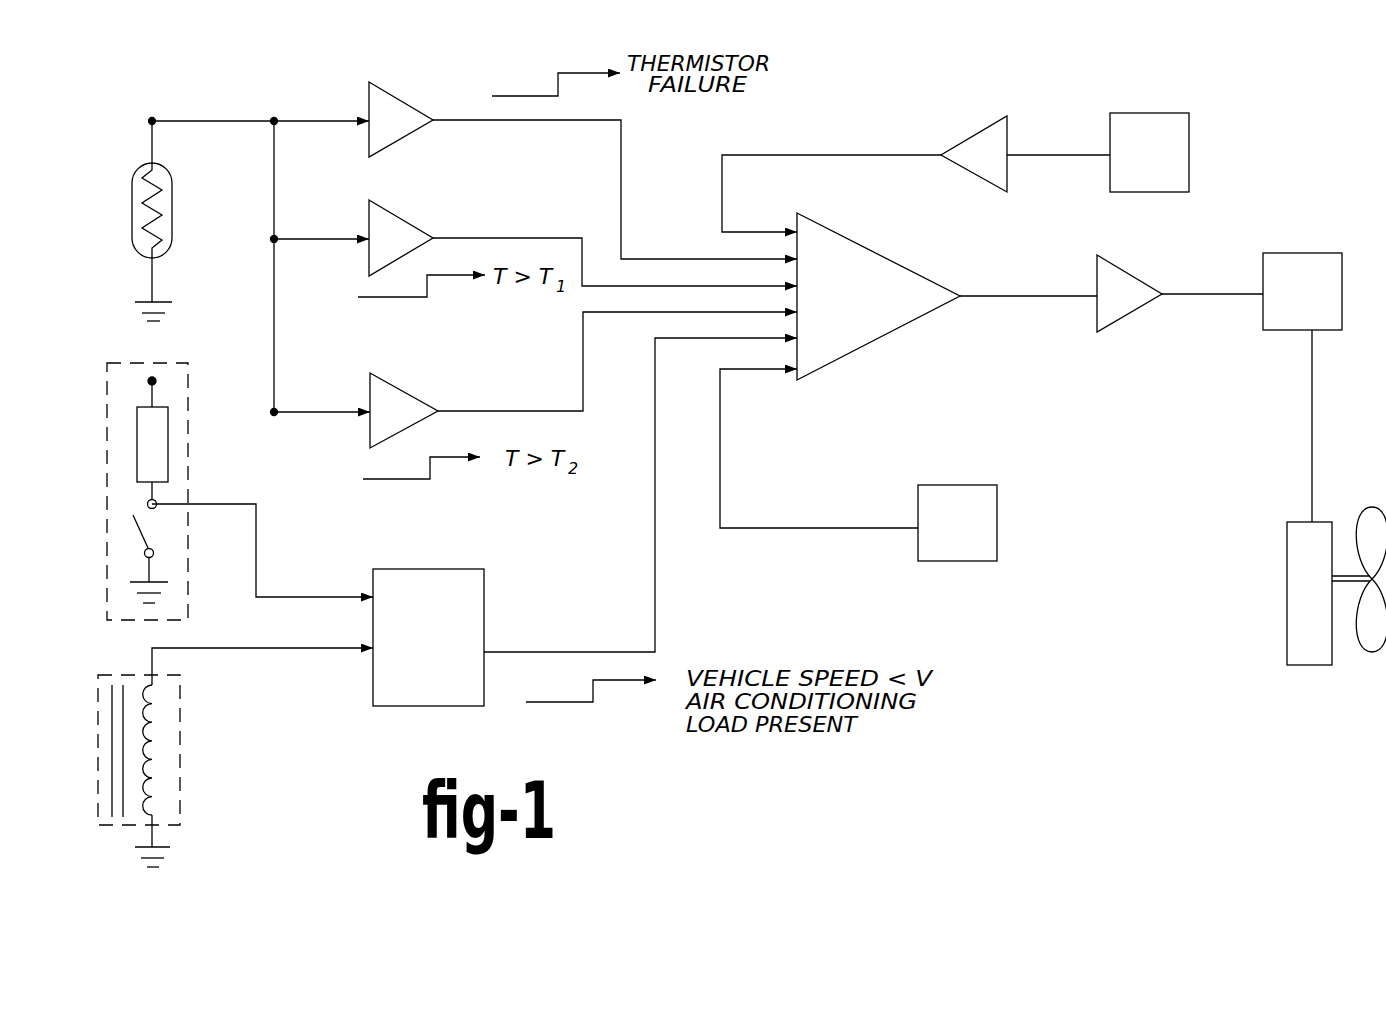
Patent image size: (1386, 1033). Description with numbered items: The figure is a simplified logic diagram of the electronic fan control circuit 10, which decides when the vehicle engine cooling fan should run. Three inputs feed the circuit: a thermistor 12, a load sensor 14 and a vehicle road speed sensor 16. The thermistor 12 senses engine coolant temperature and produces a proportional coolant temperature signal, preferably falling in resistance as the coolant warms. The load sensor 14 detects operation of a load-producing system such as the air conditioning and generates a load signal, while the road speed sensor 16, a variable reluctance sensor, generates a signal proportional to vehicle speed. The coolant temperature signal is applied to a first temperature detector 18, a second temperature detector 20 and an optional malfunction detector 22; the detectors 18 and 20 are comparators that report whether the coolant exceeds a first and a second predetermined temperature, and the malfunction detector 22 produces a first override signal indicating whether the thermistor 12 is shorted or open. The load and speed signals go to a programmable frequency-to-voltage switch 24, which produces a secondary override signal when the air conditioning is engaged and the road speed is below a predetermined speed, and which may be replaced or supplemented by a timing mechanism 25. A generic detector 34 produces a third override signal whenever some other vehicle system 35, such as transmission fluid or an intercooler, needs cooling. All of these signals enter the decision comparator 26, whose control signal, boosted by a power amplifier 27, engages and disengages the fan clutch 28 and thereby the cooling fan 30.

The electronic fan control circuit 10 is at (873, 115).
The thermistor 12 is at (133, 198).
The load sensor 14 is at (188, 415).
The vehicle road speed sensor 16 is at (180, 773).
The first temperature detector 18 is at (401, 238).
The second temperature detector 20 is at (404, 410).
The malfunction detector 22 is at (401, 119).
The programmable frequency-to-voltage switch 24 is at (428, 637).
The timing mechanism 25 is at (957, 523).
The decision comparator 26 is at (878, 296).
The power amplifier 27 is at (1129, 293).
The fan clutch 28 is at (1302, 291).
The cooling fan 30 is at (1336, 586).
The generic detector 34 is at (974, 154).
The vehicle system 35 is at (1149, 152).